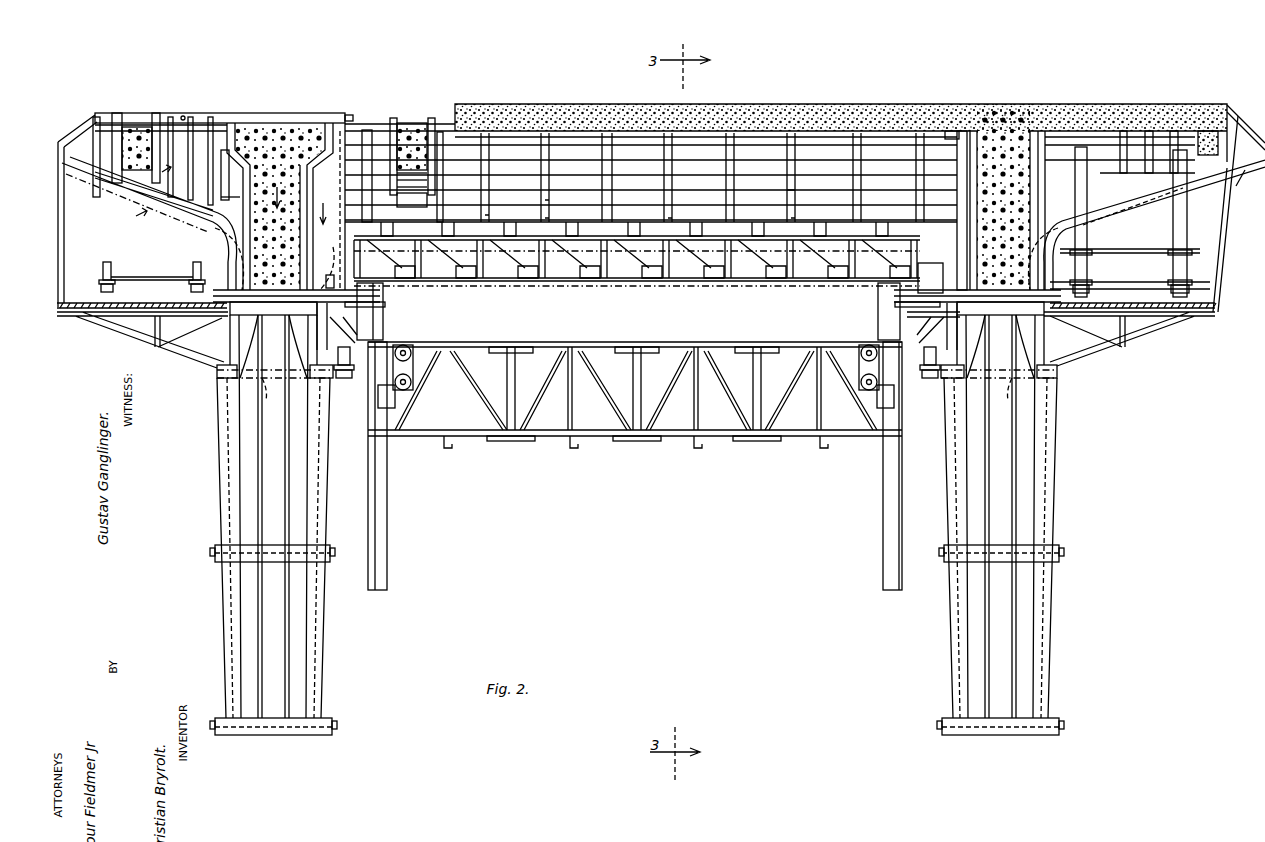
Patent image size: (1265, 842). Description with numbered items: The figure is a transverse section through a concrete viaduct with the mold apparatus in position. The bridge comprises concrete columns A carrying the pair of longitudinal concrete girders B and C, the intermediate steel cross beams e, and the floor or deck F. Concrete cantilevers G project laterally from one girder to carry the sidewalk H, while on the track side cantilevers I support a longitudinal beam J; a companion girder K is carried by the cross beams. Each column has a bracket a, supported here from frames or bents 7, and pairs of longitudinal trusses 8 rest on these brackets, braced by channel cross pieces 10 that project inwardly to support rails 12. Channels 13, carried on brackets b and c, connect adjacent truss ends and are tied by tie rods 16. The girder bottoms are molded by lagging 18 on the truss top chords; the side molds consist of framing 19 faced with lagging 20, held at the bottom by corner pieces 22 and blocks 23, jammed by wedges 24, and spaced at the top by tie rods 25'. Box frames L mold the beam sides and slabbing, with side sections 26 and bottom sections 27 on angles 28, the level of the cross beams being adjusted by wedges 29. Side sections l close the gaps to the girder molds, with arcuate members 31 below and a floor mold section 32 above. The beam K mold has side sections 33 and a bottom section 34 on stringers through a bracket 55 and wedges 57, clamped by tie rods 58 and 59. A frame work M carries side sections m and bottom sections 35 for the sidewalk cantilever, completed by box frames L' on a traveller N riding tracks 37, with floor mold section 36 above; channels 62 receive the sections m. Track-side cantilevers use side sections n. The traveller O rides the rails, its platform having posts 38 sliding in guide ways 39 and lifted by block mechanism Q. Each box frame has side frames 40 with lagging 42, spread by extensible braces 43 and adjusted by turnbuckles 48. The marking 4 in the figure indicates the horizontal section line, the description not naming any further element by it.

The concrete columns A is at (275, 512).
The longitudinal concrete girder B is at (270, 125).
The longitudinal concrete girder C is at (1008, 122).
The floor or deck F is at (620, 104).
The traveller O is at (590, 438).
The block mechanism Q is at (414, 380).
The steel cross beams e is at (570, 282).
The cantilevers I is at (106, 128).
The longitudinal beam or girder J is at (138, 127).
The companion girder K is at (412, 122).
The sidewalk H is at (1135, 104).
The box frames L is at (706, 107).
The box frames L' is at (1190, 117).
The concrete cantilevers G is at (1230, 190).
The frame work M is at (64, 232).
The traveller N is at (1207, 273).
The side sections n is at (181, 127).
The side sections l is at (956, 190).
The side sections m is at (1068, 143).
The bracket a is at (220, 378).
The bracket b is at (412, 330).
The bracket c is at (180, 358).
The concrete core 4 is at (302, 190).
The frames or bents 7 is at (222, 488).
The trusses 8 is at (310, 366).
The cross pieces 10 is at (267, 388).
The rails 12 is at (926, 382).
The channels 13 is at (1065, 334).
The tie rods 16 is at (232, 312).
The lagging 18 is at (248, 342).
The framing 19 is at (220, 130).
The lagging 20 is at (240, 125).
The corner pieces 22 is at (265, 316).
The boards or blocks 23 is at (220, 280).
The wedges 24 is at (226, 256).
The tie rods or spacers 25' is at (224, 106).
The side sections 26 is at (514, 280).
The bottom mold sections 27 is at (484, 280).
The angles 28 is at (452, 250).
The wedges 29 is at (388, 296).
The arcuate members 31 is at (930, 278).
The floor mold section 32 is at (950, 130).
The side sections 33 is at (393, 118).
The bottom section 34 is at (428, 200).
The bottom mold section 35 is at (122, 167).
The floor mold section 36 is at (1040, 160).
The tracks 37 is at (1183, 318).
The posts 38 is at (384, 302).
The guide ways 39 is at (388, 508).
The side frames 40 is at (541, 215).
The lagging 42 is at (735, 100).
The extensible braces 43 is at (549, 218).
The turnbuckles 48 is at (497, 153).
The bracket 55 is at (403, 203).
The wedges 57 is at (430, 183).
The tie rods 58 is at (430, 175).
The tie rods 59 is at (430, 120).
The channels 62 is at (140, 180).